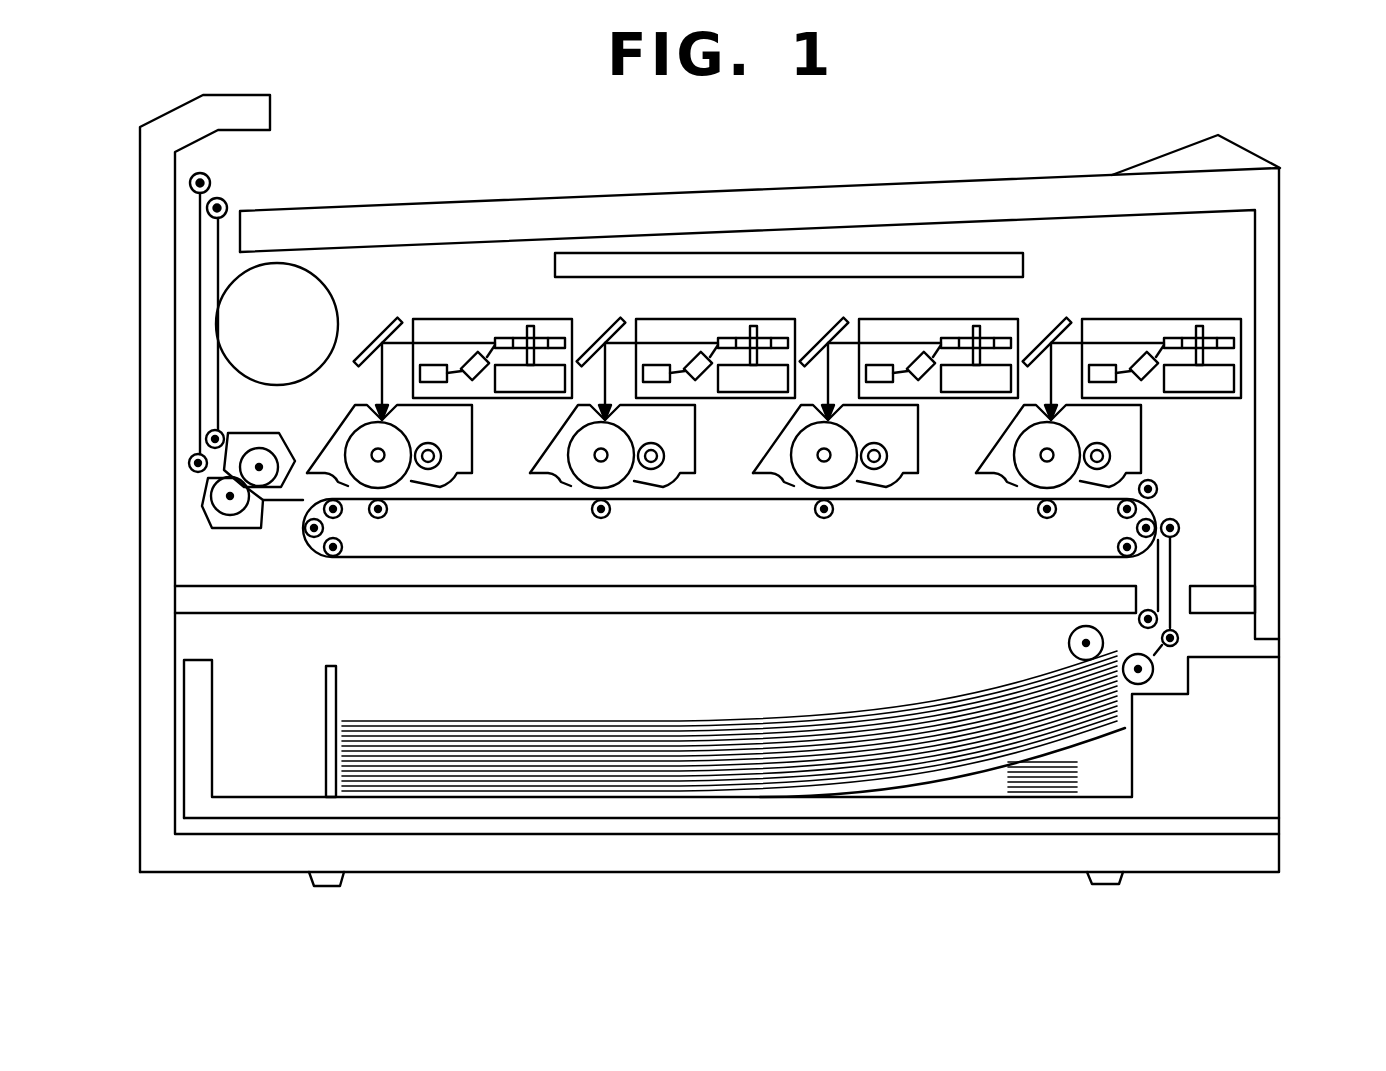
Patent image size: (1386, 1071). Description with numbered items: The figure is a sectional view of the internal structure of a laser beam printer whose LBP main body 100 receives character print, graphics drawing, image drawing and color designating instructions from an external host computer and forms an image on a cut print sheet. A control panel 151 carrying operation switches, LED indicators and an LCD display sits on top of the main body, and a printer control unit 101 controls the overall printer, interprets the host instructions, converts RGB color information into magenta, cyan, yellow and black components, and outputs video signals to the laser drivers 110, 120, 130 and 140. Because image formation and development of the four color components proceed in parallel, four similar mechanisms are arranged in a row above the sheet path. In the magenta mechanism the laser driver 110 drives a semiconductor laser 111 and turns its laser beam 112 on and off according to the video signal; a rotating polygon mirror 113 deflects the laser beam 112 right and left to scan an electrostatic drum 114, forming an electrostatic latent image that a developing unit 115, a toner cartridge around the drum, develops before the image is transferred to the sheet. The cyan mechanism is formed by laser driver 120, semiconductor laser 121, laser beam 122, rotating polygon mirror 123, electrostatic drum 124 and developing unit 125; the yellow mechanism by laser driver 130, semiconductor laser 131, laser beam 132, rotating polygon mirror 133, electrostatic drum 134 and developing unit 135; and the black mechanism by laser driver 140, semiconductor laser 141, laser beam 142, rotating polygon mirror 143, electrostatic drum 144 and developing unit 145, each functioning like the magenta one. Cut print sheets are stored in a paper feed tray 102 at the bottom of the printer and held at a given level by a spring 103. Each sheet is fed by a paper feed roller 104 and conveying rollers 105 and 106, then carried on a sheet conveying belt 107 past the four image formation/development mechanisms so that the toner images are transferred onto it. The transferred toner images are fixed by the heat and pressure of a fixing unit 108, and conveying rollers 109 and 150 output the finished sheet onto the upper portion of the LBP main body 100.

The LBP main body 100 is at (1280, 280).
The printer control unit 101 is at (1023, 265).
The paper feed tray 102 is at (1261, 702).
The spring 103 is at (1077, 773).
The paper feed roller 104 is at (1069, 643).
The conveying roller 105 is at (1178, 637).
The conveying roller 106 is at (1179, 528).
The sheet conveying belt 107 is at (870, 500).
The fixing unit 108 is at (204, 504).
The conveying roller 109 is at (189, 463).
The laser driver 110 is at (1102, 366).
The semiconductor laser 111 is at (1147, 374).
The laser beam 112 is at (1147, 352).
The rotating polygon mirror 113 is at (1173, 343).
The electrostatic drum 114 is at (1032, 490).
The developing unit 115 is at (1130, 461).
The laser driver 120 is at (878, 367).
The semiconductor laser 121 is at (924, 372).
The laser beam 122 is at (924, 348).
The rotating polygon mirror 123 is at (949, 340).
The electrostatic drum 124 is at (807, 490).
The developing unit 125 is at (904, 446).
The laser driver 130 is at (655, 367).
The semiconductor laser 131 is at (701, 372).
The laser beam 132 is at (701, 348).
The rotating polygon mirror 133 is at (726, 340).
The electrostatic drum 134 is at (585, 488).
The developing unit 135 is at (681, 446).
The laser driver 140 is at (432, 367).
The semiconductor laser 141 is at (478, 372).
The laser beam 142 is at (478, 348).
The rotating polygon mirror 143 is at (503, 340).
The electrostatic drum 144 is at (357, 452).
The developing unit 145 is at (457, 444).
The conveying roller 150 is at (220, 199).
The control panel 151 is at (1247, 150).